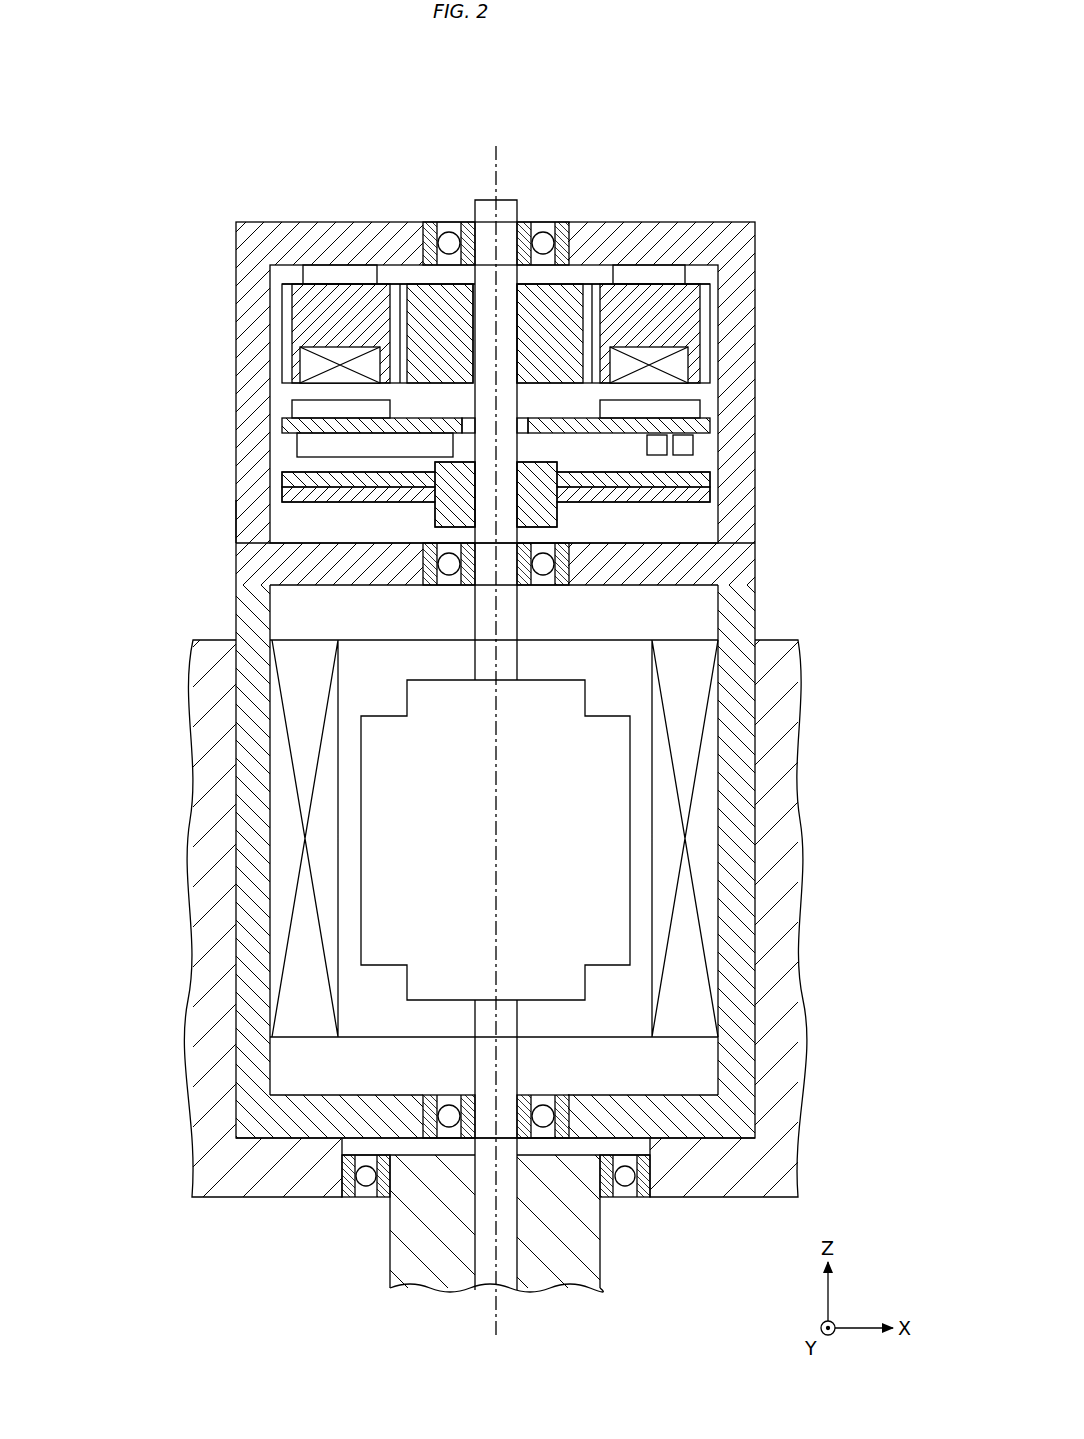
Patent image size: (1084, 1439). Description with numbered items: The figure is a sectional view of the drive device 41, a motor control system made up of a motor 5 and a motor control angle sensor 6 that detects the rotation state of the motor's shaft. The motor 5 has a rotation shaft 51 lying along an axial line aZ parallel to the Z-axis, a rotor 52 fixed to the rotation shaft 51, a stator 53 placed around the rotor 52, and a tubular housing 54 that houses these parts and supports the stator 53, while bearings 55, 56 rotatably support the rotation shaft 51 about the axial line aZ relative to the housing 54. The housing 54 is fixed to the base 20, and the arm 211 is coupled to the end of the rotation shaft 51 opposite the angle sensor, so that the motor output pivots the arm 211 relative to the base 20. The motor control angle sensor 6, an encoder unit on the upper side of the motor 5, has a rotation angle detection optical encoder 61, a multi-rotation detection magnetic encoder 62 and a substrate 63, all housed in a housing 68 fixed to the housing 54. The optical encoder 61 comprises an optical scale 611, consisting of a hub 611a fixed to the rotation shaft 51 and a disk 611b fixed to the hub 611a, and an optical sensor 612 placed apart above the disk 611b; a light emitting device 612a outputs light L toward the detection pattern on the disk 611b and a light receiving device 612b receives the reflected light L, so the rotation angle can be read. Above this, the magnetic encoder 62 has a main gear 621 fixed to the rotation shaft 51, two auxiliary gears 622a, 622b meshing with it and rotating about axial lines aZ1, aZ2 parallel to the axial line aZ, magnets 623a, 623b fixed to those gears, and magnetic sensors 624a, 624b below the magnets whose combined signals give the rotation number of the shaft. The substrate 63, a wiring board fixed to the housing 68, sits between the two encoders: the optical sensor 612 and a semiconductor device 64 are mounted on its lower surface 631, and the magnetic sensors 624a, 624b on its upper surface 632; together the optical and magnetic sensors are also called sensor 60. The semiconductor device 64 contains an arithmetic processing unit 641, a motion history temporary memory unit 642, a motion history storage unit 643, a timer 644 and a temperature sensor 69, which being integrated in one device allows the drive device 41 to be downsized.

The drive device 41 is at (748, 115).
The motor 5 is at (236, 612).
The rotation shaft 51 is at (510, 615).
The rotor 52 is at (616, 785).
The stator 53 is at (707, 868).
The housing 54 is at (735, 975).
The bearing 55 is at (565, 562).
The bearing 56 is at (560, 1110).
The motor control angle sensor 6 is at (236, 275).
The sensor 60 is at (510, 389).
The optical encoder 61 is at (523, 486).
The optical scale 611 is at (582, 478).
The hub 611a is at (697, 495).
The disk 611b is at (697, 480).
The optical sensor 612 is at (784, 409).
The light emitting device 612a is at (683, 447).
The light receiving device 612b is at (657, 440).
The magnetic encoder 62 is at (453, 251).
The main gear 621 is at (568, 315).
The auxiliary gear 622a is at (672, 295).
The auxiliary gear 622b is at (358, 293).
The magnet 623a is at (625, 362).
The magnet 623b is at (317, 363).
The magnetic sensor 624a is at (660, 408).
The magnetic sensor 624b is at (290, 408).
The substrate 63 is at (292, 427).
The lower surface 631 is at (588, 434).
The upper surface 632 is at (568, 420).
The semiconductor device 64 is at (302, 445).
The arithmetic processing unit 641 is at (98, 516).
The motion history temporary memory unit 642 is at (98, 542).
The motion history storage unit 643 is at (98, 568).
The timer 644 is at (98, 594).
The temperature sensor 69 is at (363, 447).
The housing 68 is at (255, 525).
The base 20 is at (217, 840).
The arm 211 is at (418, 1230).
The axial line aZ is at (496, 165).
The axial line aZ1 is at (649, 430).
The axial line aZ2 is at (340, 430).
The light L is at (683, 455).